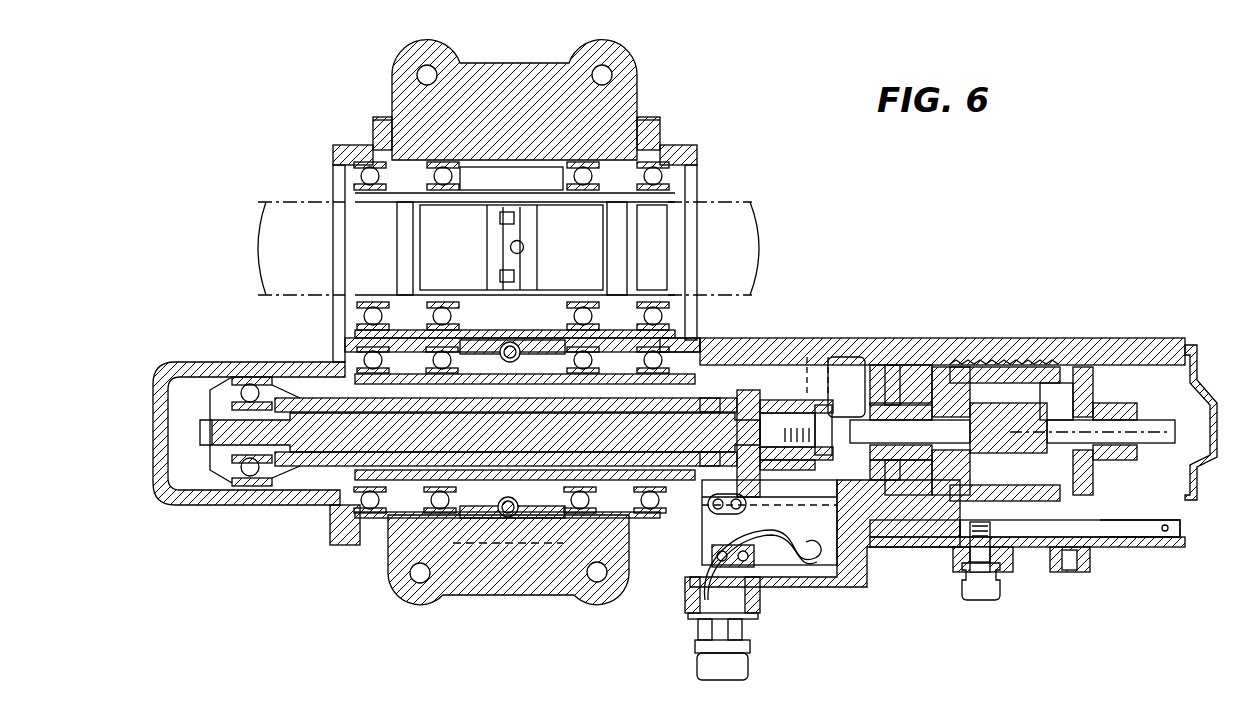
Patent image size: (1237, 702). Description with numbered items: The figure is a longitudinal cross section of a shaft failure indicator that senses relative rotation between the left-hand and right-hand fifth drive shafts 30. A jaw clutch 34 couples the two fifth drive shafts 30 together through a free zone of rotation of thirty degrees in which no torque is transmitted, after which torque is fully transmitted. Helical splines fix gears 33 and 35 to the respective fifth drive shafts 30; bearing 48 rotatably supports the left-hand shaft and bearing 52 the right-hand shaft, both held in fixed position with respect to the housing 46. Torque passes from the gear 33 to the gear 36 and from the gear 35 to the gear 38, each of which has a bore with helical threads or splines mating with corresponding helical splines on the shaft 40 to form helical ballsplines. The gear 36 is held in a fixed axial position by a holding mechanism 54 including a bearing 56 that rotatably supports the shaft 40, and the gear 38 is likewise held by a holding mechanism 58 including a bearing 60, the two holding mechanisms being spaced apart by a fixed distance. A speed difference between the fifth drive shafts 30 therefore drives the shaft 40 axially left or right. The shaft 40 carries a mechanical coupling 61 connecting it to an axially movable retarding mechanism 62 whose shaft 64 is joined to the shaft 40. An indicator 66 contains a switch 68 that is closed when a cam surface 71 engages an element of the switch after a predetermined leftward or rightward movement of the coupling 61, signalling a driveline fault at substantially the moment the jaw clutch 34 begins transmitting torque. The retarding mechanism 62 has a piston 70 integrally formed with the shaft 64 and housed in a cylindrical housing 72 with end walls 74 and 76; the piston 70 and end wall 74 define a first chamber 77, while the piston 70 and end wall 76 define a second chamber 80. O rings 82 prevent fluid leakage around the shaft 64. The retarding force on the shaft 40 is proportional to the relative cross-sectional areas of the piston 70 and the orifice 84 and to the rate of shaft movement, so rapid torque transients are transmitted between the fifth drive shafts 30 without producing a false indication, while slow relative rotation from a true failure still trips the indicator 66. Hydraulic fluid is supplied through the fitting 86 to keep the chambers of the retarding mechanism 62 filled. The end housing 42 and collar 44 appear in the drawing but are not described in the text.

The fifth drive shaft 30 is at (292, 200).
The gear 33 is at (390, 128).
The jaw clutch 34 is at (486, 247).
The gear 35 is at (650, 132).
The gear 36 is at (392, 565).
The gear 38 is at (620, 585).
The shaft 40 is at (330, 428).
The end housing 42 is at (322, 496).
The collar 44 is at (672, 414).
The housing 46 is at (337, 148).
The bearing 48 is at (356, 326).
The bearing 52 is at (690, 150).
The holding mechanism 54 is at (344, 354).
The bearing 56 is at (334, 537).
The holding mechanism 58 is at (684, 374).
The bearing 60 is at (680, 340).
The mechanical coupling 61 is at (757, 384).
The retarding mechanism 62 is at (1007, 328).
The shaft 64 is at (862, 430).
The indicator 66 is at (784, 492).
The switch 68 is at (697, 527).
The piston 70 is at (1040, 420).
The cam surface 71 is at (782, 470).
The cylindrical housing 72 is at (1018, 380).
The end wall 74 is at (958, 370).
The end wall 76 is at (1092, 396).
The first chamber 77 is at (950, 412).
The second chamber 80 is at (1052, 388).
The O rings 82 is at (918, 452).
The orifice 84 is at (982, 462).
The fitting 86 is at (984, 593).